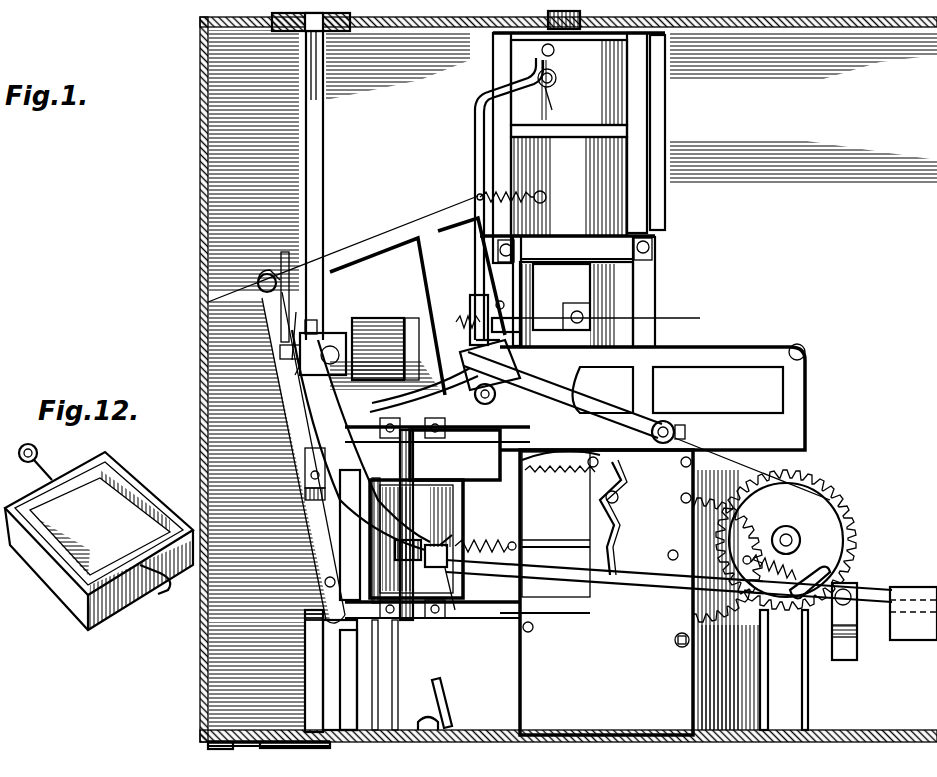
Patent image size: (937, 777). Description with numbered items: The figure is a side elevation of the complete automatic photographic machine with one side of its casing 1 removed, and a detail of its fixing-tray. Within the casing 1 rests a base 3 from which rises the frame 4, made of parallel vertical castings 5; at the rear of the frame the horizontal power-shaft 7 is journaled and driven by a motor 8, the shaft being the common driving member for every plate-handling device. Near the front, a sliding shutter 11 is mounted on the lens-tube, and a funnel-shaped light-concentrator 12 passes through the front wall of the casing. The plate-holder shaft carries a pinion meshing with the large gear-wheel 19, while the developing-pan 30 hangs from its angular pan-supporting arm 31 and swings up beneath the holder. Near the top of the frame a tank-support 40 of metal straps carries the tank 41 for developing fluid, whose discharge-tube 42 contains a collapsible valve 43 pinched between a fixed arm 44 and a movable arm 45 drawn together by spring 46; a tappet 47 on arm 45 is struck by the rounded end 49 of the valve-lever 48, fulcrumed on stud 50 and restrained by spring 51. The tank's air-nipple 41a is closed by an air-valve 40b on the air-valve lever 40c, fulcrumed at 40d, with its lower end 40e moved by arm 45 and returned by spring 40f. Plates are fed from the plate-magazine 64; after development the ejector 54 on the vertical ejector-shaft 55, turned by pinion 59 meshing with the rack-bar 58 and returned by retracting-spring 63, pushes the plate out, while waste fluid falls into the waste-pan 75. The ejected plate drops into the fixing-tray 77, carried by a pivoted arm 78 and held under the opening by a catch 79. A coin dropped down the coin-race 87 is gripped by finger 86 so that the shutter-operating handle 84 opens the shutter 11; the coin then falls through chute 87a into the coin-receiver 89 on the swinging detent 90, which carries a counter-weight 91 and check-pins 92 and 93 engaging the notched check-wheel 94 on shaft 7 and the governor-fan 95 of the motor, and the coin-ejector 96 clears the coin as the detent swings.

In FIG. 1, the casing 1 is at (200, 141).
In FIG. 1, the base 3 is at (290, 731).
In FIG. 1, the frame 4 is at (655, 290).
In FIG. 1, the vertical castings 5 is at (806, 382).
In FIG. 1, the power-shaft 7 is at (791, 533).
In FIG. 1, the motor 8 is at (596, 592).
In FIG. 1, the sliding shutter 11 is at (310, 380).
In FIG. 1, the light-concentrator 12 is at (262, 300).
In FIG. 1, the gear-wheel 19 is at (556, 470).
In FIG. 1, the developing-pan 30 is at (452, 500).
In FIG. 1, the pan-supporting arm 31 is at (398, 436).
In FIG. 1, the tank-support 40 is at (633, 92).
In FIG. 1, the air-valve 40b is at (559, 102).
In FIG. 1, the air-valve lever 40c is at (476, 155).
In FIG. 1, the fulcrum of air-valve lever 40d is at (554, 50).
In FIG. 1, the lower end of air-valve lever 40e is at (472, 352).
In FIG. 1, the spring 40f is at (524, 190).
In FIG. 1, the tank 41 is at (665, 192).
In FIG. 1, the air-nipple 41a is at (556, 80).
In FIG. 1, the discharge-tube 42 is at (437, 405).
In FIG. 1, the collapsible valve 43 is at (522, 321).
In FIG. 1, the fixed clamp arm 44 is at (561, 339).
In FIG. 1, the movable clamp arm 45 is at (520, 353).
In FIG. 1, the spring 46 is at (466, 316).
In FIG. 1, the tappet 47 is at (475, 396).
In FIG. 1, the valve-lever 48 is at (563, 395).
In FIG. 1, the rounded engaging end 49 is at (494, 365).
In FIG. 1, the stud 50 is at (676, 430).
In FIG. 1, the spring 51 is at (668, 425).
In FIG. 1, the ejector 54 is at (455, 455).
In FIG. 1, the ejector-shaft 55 is at (410, 452).
In FIG. 1, the rack-bar 58 is at (556, 529).
In FIG. 1, the pinion 59 is at (398, 555).
In FIG. 1, the retracting-spring 63 is at (486, 542).
In FIG. 1, the plate-magazine 64 is at (610, 319).
In FIG. 1, the waste-pan 75 is at (305, 628).
In FIG. 1, the fixing-tray 77 is at (206, 746).
In FIG. 12, the fixing-tray 77 is at (88, 630).
In FIG. 1, the arm 78 is at (205, 744).
In FIG. 12, the arm 78 is at (133, 476).
In FIG. 1, the catch 79 is at (266, 740).
In FIG. 12, the catch 79 is at (162, 594).
In FIG. 1, the shutter-operating handle 84 is at (365, 338).
In FIG. 1, the finger 86 is at (330, 325).
In FIG. 1, the coin-race 87 is at (323, 142).
In FIG. 1, the chute 87a is at (361, 440).
In FIG. 1, the coin-receiver 89 is at (452, 612).
In FIG. 1, the detent 90 is at (875, 592).
In FIG. 1, the counter-weight 91 is at (903, 630).
In FIG. 1, the check-pin 92 is at (786, 576).
In FIG. 1, the check-pin 93 is at (616, 542).
In FIG. 1, the check-wheel 94 is at (786, 540).
In FIG. 1, the governor-fan 95 is at (620, 490).
In FIG. 1, the coin-ejector 96 is at (446, 692).